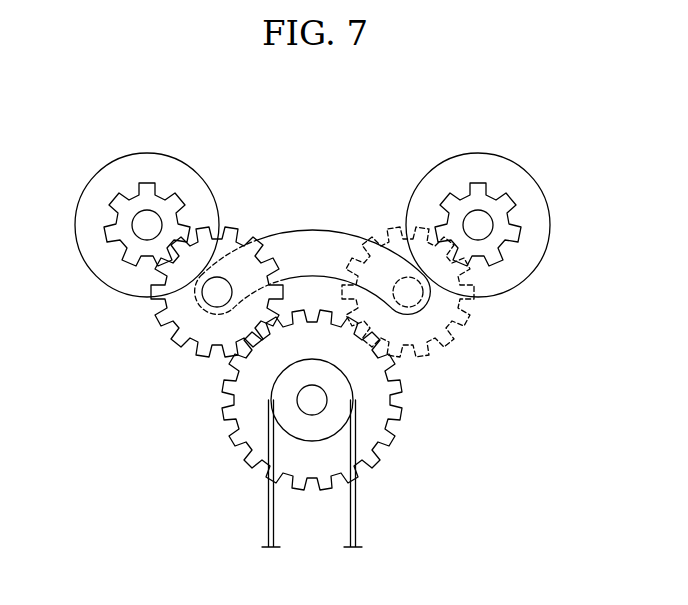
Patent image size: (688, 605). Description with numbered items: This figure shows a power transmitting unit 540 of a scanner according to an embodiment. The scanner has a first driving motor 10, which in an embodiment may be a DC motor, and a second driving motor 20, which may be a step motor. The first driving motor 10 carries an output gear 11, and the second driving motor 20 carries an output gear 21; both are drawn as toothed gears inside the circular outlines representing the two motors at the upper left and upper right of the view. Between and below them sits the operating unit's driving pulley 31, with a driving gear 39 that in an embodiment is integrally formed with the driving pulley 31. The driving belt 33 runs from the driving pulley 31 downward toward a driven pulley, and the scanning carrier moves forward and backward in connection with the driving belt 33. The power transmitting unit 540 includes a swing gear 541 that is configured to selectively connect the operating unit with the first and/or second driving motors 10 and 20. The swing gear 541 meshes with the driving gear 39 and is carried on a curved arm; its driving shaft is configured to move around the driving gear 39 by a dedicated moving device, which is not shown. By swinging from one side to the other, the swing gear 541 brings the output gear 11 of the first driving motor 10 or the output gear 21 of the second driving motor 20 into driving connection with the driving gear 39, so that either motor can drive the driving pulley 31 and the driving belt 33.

The first driving motor 10 is at (112, 172).
The output gear 11 is at (108, 250).
The second driving motor 20 is at (518, 177).
The output gear 21 is at (515, 240).
The driving pulley 31 is at (345, 393).
The driving belt 33 is at (355, 510).
The driving gear 39 is at (390, 425).
The power transmitting unit 540 is at (135, 347).
The swing gear 541 is at (193, 353).